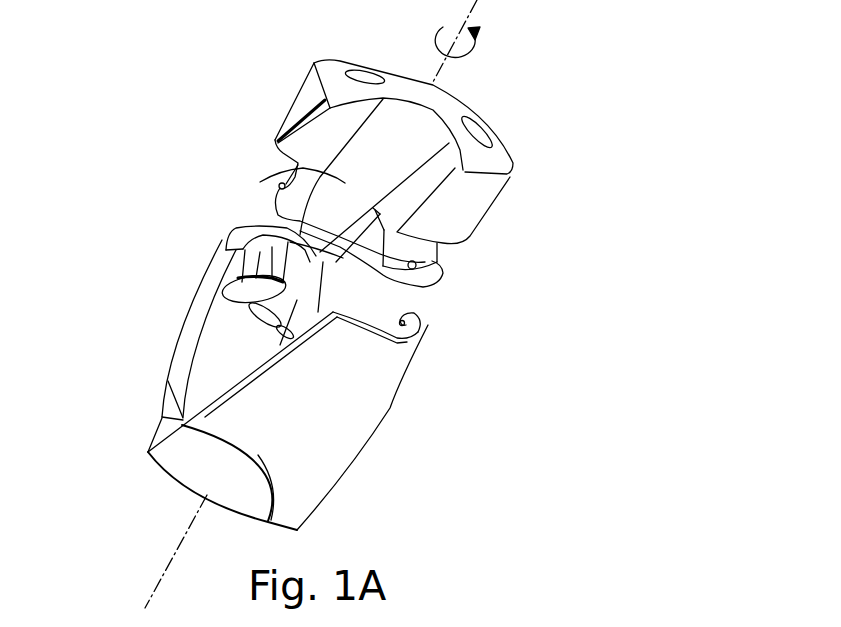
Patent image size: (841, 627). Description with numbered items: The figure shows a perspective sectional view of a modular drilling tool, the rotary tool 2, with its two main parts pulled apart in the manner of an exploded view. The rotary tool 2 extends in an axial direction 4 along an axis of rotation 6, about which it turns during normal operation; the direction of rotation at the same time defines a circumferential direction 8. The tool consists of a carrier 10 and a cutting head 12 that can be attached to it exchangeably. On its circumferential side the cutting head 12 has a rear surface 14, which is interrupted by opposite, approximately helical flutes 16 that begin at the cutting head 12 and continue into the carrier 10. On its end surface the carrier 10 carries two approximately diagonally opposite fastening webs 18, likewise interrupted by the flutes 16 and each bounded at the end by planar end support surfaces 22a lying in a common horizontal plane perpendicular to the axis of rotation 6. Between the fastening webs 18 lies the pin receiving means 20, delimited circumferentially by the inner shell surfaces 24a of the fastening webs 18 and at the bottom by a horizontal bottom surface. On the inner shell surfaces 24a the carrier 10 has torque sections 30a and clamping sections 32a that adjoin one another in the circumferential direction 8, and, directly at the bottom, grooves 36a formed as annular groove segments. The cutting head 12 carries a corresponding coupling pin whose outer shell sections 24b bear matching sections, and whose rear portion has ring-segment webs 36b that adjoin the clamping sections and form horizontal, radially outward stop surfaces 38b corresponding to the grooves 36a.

The rotary tool 2 is at (627, 127).
The axial direction 4 is at (478, 5).
The axis of rotation 6 is at (176, 551).
The circumferential direction 8 is at (478, 52).
The carrier 10 is at (345, 450).
The cutting head 12 is at (478, 190).
The rear surface 14 is at (300, 102).
The flutes 16 is at (300, 166).
The fastening webs 18 is at (222, 246).
The pin receiving means 20 is at (392, 307).
The end support surfaces 22a is at (423, 327).
The inner shell surfaces 24a is at (300, 223).
The outer shell sections 24b is at (463, 243).
The torque sections 30a is at (227, 303).
The clamping sections 32a is at (240, 282).
The grooves 36a is at (227, 285).
The webs 36b is at (442, 268).
The stop surfaces 38b is at (445, 285).